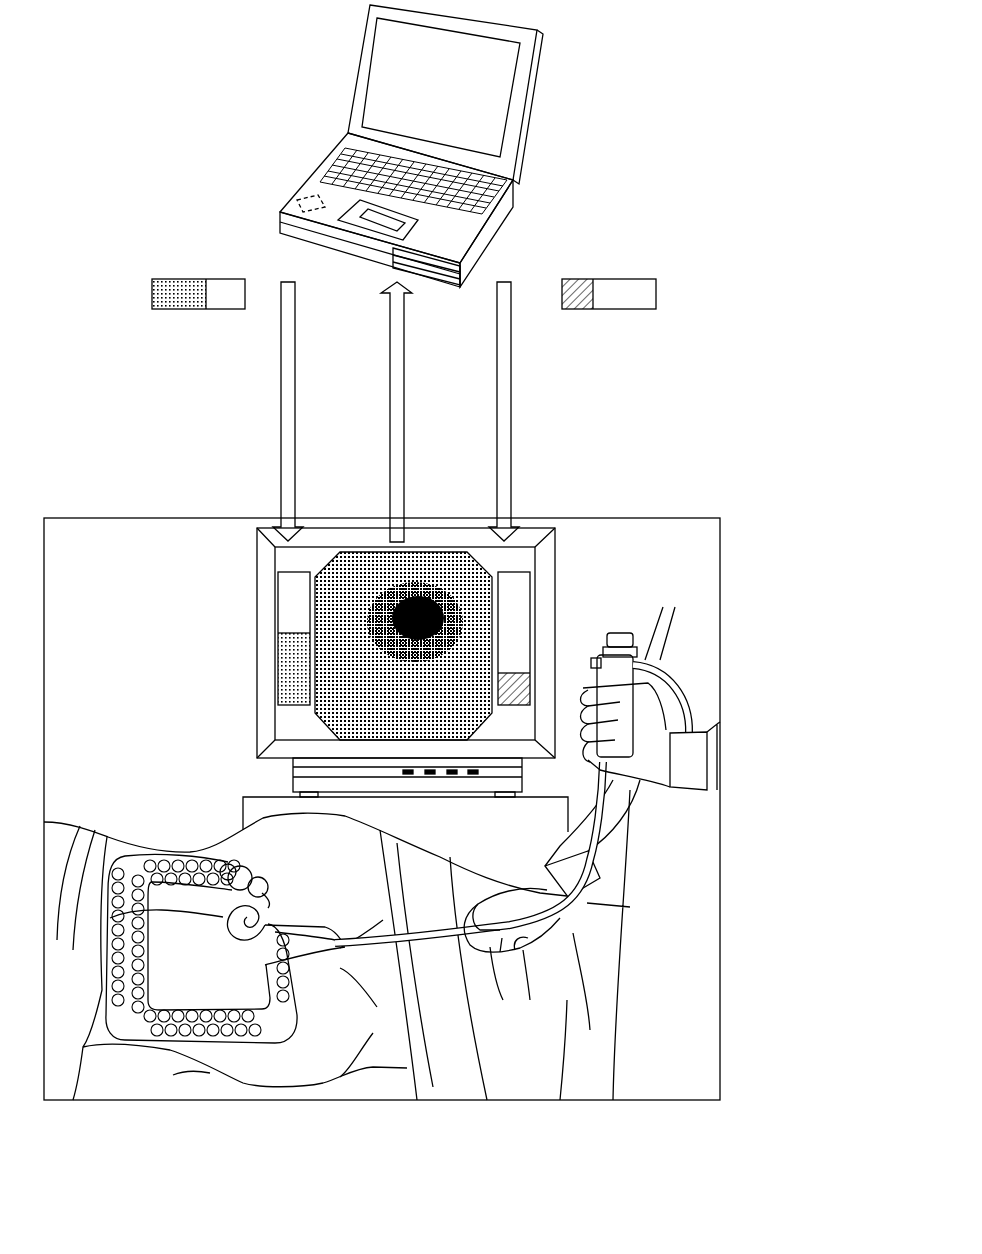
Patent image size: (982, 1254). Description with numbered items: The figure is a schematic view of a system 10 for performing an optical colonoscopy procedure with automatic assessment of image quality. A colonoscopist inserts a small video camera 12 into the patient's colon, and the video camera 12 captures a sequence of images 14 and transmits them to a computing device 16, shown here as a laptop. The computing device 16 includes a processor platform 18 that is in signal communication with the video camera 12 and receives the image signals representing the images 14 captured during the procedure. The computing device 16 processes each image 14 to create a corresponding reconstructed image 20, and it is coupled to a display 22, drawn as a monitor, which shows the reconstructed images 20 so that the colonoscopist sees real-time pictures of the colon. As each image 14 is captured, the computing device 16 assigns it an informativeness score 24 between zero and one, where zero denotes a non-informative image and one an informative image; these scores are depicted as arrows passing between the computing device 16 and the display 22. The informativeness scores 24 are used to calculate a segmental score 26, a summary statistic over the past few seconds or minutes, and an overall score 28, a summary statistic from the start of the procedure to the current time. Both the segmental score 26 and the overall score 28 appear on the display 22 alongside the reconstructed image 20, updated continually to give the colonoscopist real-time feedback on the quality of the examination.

The system 10 is at (644, 90).
The video camera 12 is at (415, 963).
The images 14 is at (407, 406).
The computing device 16 is at (389, 146).
The processor platform 18 is at (293, 198).
The reconstructed image 20 is at (385, 632).
The display 22 is at (410, 662).
The informativeness score 24 is at (283, 278).
The segmental score 26 is at (150, 292).
The overall score 28 is at (640, 277).